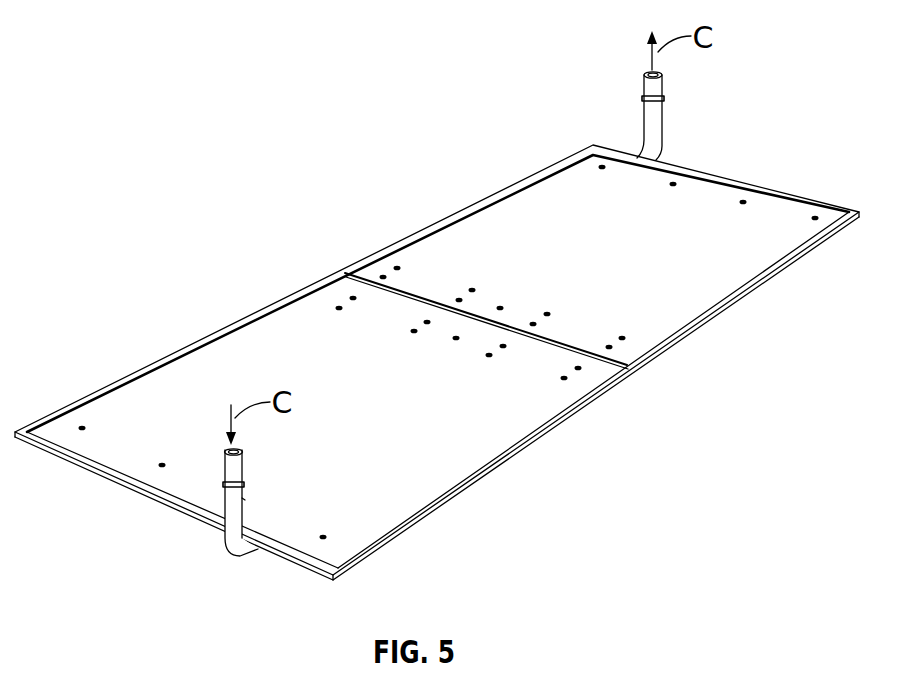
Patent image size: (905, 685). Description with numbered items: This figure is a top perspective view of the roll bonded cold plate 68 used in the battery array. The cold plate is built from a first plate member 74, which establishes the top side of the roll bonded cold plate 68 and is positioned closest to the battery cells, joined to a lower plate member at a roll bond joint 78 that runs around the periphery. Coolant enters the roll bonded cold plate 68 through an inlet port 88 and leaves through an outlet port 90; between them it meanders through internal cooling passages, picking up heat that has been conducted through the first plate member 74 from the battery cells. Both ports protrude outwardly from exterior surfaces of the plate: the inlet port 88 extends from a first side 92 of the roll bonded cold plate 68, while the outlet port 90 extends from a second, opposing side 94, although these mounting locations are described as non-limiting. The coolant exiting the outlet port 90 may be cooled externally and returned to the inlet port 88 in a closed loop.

The roll bonded cold plate 68 is at (455, 177).
The first plate member 74 is at (492, 428).
The roll bond joint 78 is at (421, 517).
The inlet port 88 is at (228, 517).
The outlet port 90 is at (665, 99).
The first side 92 is at (86, 495).
The second, opposing side 94 is at (773, 172).